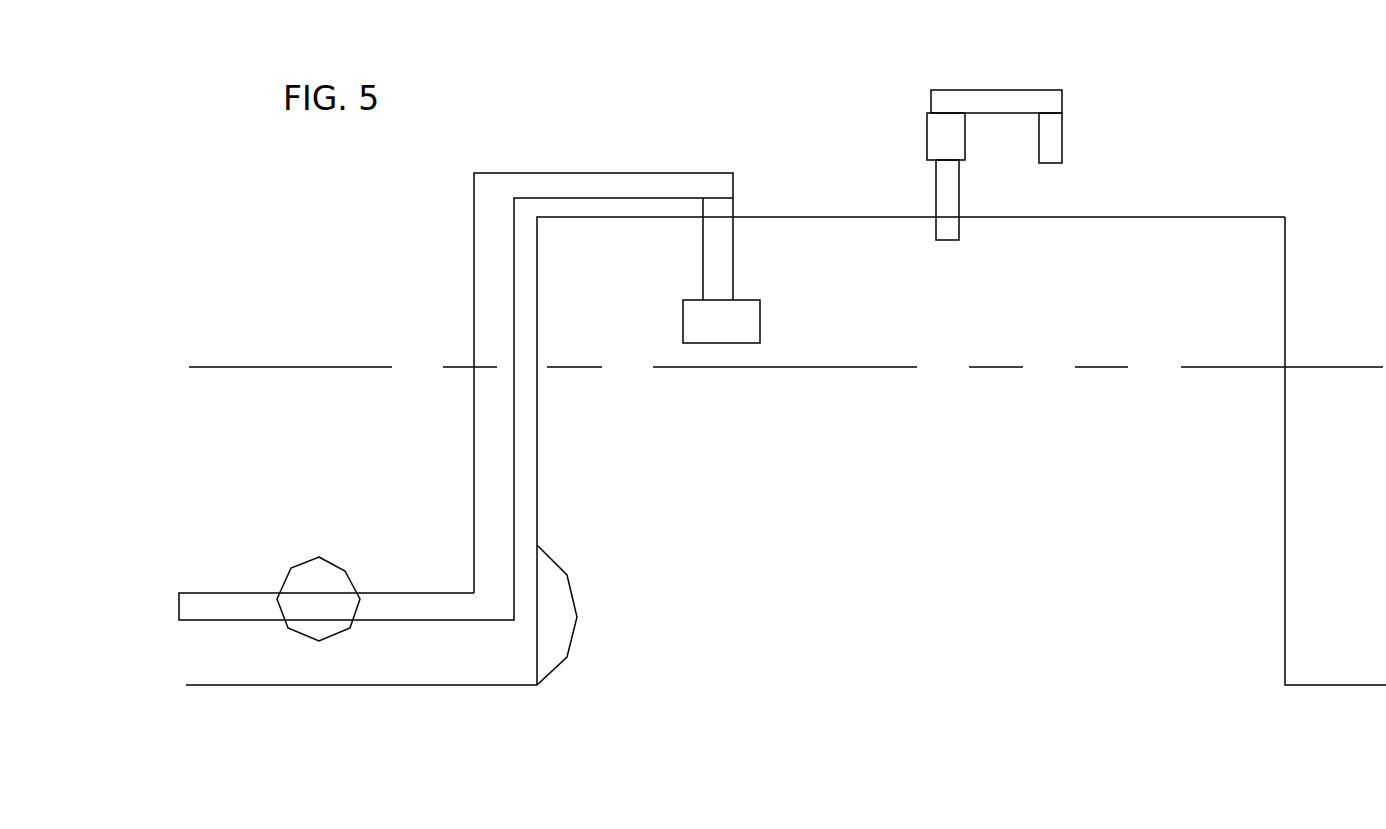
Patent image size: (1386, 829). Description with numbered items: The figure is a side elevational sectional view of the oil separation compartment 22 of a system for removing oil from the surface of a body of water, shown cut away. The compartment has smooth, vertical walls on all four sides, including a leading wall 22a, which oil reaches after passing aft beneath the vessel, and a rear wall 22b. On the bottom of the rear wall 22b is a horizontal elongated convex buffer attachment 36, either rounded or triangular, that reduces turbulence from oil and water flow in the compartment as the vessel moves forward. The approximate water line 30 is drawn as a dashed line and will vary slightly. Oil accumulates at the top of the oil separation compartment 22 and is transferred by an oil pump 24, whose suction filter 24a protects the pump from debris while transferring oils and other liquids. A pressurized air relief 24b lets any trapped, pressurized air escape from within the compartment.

The oil separation compartment 22 is at (961, 407).
The leading wall 22a is at (1307, 451).
The rear wall 22b is at (456, 396).
The oil pump 24 is at (342, 575).
The suction filter 24a is at (790, 311).
The pressurized air relief 24b is at (979, 132).
The water line 30 is at (786, 324).
The horizontal elongated convex buffer attachment 36 is at (596, 615).